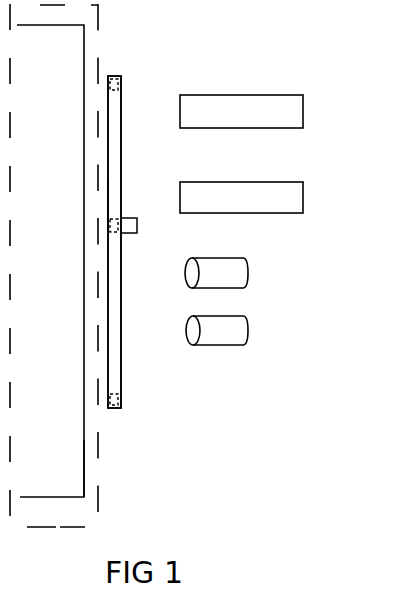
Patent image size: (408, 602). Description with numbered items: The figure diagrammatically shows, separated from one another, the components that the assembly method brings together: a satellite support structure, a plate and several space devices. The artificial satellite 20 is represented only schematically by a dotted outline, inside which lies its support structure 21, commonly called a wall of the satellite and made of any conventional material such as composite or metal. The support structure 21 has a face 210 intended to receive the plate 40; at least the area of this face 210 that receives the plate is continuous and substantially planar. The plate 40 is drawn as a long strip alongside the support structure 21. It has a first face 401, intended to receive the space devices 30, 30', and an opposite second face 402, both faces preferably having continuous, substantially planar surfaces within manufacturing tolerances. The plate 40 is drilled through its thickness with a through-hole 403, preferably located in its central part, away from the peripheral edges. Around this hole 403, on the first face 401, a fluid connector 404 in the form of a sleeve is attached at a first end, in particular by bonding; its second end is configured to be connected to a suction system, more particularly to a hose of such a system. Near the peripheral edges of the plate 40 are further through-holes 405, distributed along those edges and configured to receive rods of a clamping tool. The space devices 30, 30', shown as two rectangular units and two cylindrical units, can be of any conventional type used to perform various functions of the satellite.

The artificial satellite 20 is at (98, 20).
The support structure 21 is at (84, 48).
The face 210 is at (84, 473).
The plate 40 is at (110, 373).
The first face 401 is at (121, 161).
The second face 402 is at (108, 204).
The through-hole 403 is at (108, 223).
The fluid connector 404 is at (137, 227).
The through-holes 405 is at (120, 84).
The space devices 30 is at (287, 154).
The space devices 30' is at (267, 301).